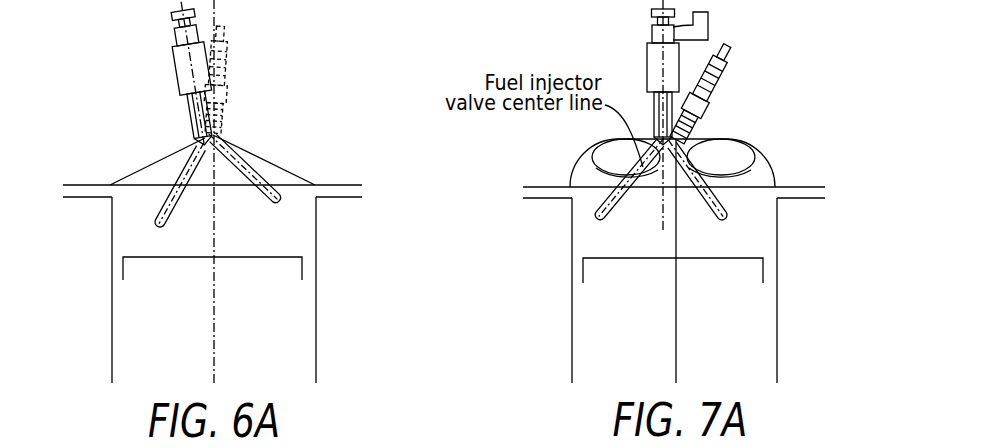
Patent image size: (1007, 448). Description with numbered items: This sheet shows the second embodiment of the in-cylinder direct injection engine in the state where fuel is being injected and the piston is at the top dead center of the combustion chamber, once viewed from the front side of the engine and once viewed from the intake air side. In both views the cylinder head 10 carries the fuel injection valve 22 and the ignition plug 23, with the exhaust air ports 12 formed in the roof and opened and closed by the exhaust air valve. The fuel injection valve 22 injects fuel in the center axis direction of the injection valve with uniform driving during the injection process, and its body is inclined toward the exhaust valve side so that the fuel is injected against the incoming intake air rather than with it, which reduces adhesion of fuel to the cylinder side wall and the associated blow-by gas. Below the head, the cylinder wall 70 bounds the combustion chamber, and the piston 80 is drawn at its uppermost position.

In FIG. 6A, the cylinder head 10 is at (302, 151).
In FIG. 7A, the cylinder head 10 is at (779, 152).
In FIG. 7A, the exhaust air port 12 is at (610, 153).
In FIG. 6A, the fuel injection valve 22 is at (184, 67).
In FIG. 7A, the fuel injection valve 22 is at (647, 58).
In FIG. 6A, the ignition plug 23 is at (229, 85).
In FIG. 7A, the ignition plug 23 is at (722, 88).
In FIG. 6A, the cylinder wall 70 is at (327, 234).
In FIG. 7A, the cylinder wall 70 is at (790, 237).
In FIG. 6A, the piston 80 is at (290, 268).
In FIG. 7A, the piston 80 is at (757, 270).